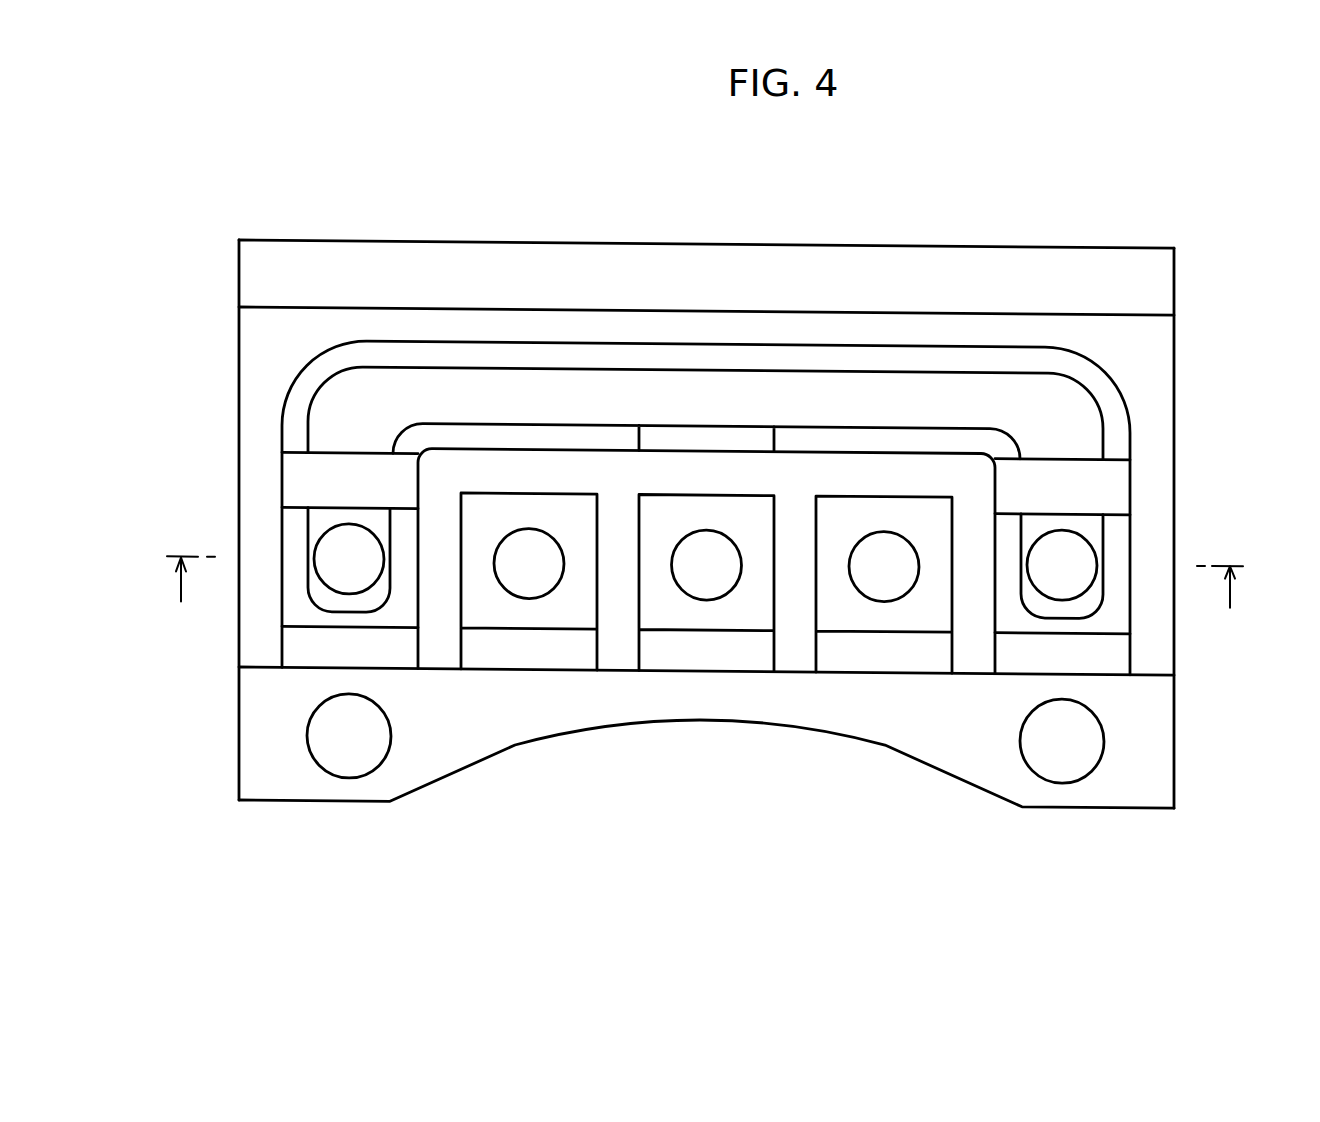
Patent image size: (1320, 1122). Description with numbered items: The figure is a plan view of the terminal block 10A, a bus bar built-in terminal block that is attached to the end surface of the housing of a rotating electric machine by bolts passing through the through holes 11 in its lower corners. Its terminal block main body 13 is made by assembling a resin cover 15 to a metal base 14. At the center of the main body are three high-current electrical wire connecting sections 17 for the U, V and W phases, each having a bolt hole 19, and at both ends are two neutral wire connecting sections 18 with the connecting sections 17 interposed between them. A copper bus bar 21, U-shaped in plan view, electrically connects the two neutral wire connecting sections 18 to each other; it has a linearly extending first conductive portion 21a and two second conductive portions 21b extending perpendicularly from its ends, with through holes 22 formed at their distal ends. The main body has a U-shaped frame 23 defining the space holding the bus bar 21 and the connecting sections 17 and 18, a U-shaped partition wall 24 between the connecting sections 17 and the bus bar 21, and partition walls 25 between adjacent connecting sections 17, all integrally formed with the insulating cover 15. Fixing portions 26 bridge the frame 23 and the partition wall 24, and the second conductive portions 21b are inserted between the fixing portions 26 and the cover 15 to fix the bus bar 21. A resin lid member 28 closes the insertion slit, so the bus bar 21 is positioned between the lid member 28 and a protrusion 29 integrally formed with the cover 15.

The terminal block 10A is at (977, 224).
The through holes 11 is at (348, 776).
The terminal block main body 13 is at (222, 387).
The base 14 is at (1165, 720).
The cover 15 is at (1165, 400).
The high-current electrical wire connecting sections 17 is at (523, 611).
The neutral wire connecting sections 18 is at (392, 611).
The bolt holes 19 is at (525, 598).
The bus bar 21 is at (1093, 403).
The first conductive portion 21a is at (910, 379).
The second conductive portions 21b is at (320, 522).
The through holes 22 is at (344, 592).
The frame 23 is at (838, 318).
The partition wall 24 is at (535, 457).
The partition walls 25 is at (613, 650).
The fixing portions 26 is at (290, 477).
The lid member 28 is at (1167, 277).
The protrusion 29 is at (705, 429).